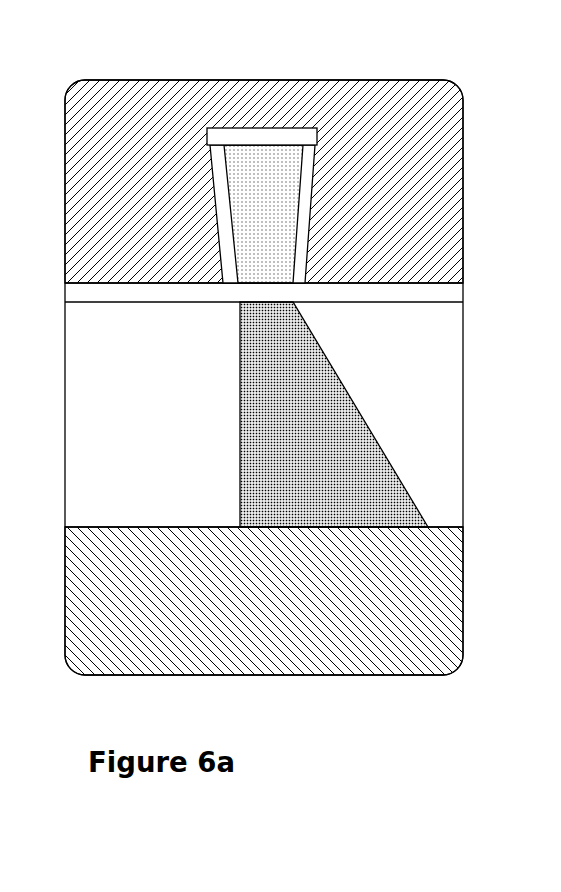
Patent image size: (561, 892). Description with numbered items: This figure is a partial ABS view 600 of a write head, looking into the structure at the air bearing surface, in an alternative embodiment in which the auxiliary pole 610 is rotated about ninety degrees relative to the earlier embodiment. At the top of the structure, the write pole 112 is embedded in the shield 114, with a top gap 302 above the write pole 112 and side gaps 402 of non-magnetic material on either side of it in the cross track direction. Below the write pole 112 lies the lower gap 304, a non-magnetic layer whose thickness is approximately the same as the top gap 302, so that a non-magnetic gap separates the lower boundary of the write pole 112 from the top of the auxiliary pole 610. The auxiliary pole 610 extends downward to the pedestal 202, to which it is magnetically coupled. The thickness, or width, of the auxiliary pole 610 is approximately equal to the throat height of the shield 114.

The partial ABS view 600 is at (447, 54).
The shield 114 is at (404, 197).
The side gaps 402 is at (220, 177).
The write pole 112 is at (263, 182).
The top gap 302 is at (317, 132).
The lower gap 304 is at (463, 291).
The auxiliary pole 610 is at (326, 469).
The pedestal 202 is at (284, 626).